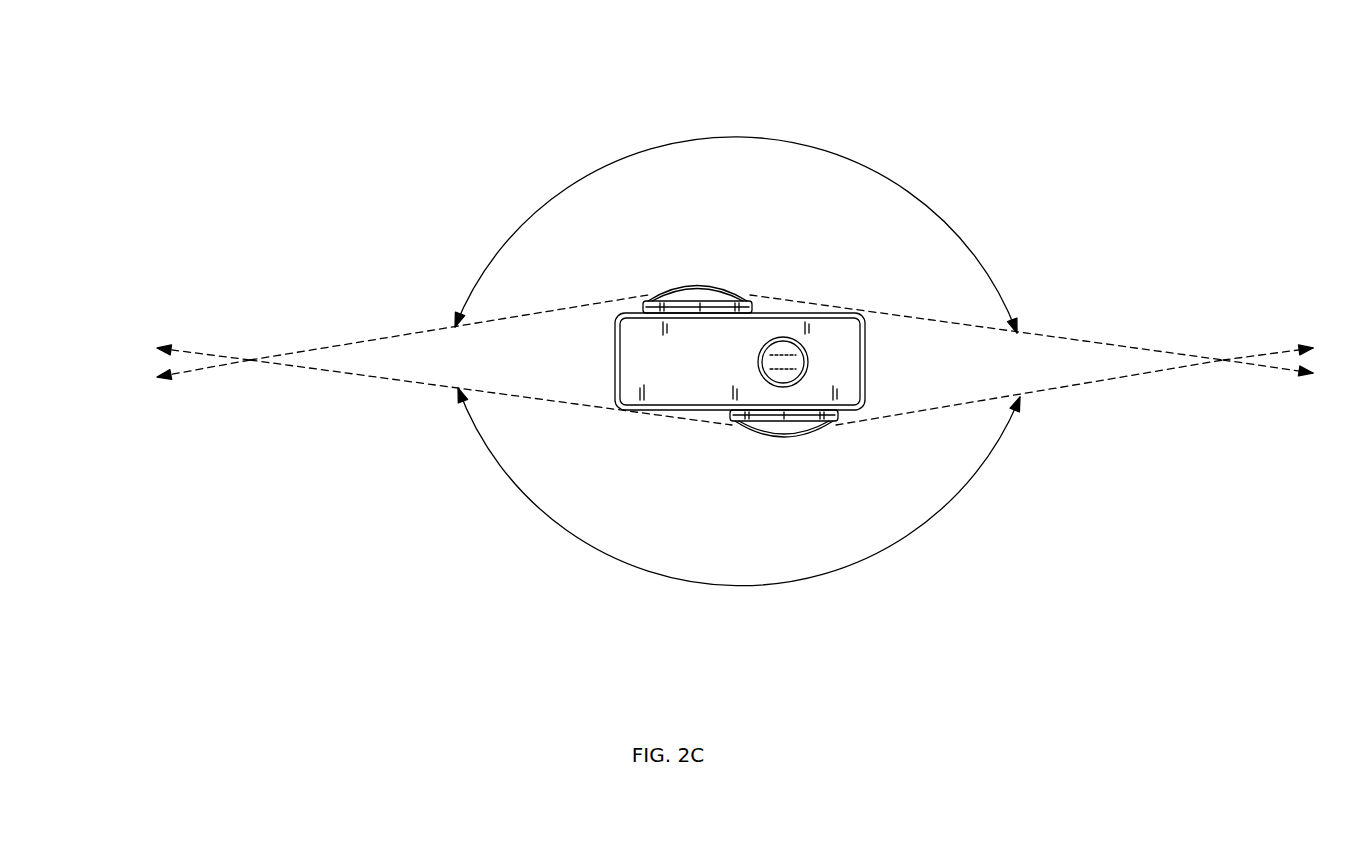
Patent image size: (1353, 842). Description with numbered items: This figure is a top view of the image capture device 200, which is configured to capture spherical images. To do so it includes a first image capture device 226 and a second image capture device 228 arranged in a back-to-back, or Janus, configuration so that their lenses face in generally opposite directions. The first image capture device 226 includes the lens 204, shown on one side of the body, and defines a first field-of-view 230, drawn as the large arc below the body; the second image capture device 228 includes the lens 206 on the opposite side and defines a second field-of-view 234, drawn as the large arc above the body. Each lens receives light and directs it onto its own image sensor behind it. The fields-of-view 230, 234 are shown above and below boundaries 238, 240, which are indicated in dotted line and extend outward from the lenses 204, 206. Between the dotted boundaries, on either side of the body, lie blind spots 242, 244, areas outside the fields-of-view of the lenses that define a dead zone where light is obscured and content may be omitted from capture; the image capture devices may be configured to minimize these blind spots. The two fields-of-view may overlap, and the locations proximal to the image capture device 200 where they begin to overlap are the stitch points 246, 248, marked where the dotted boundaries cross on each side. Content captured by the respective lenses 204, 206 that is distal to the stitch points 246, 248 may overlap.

The image capture device 200 is at (1163, 118).
The lens 204 is at (783, 430).
The lens 206 is at (703, 290).
The first image capture device 226 is at (682, 430).
The second image capture device 228 is at (665, 278).
The first field-of-view 230 is at (672, 576).
The second field-of-view 234 is at (852, 160).
The boundary 238 is at (1132, 378).
The boundary 240 is at (1170, 355).
The blind spot 242 is at (533, 370).
The blind spot 244 is at (928, 380).
The stitch point 246 is at (250, 362).
The stitch point 248 is at (1225, 363).